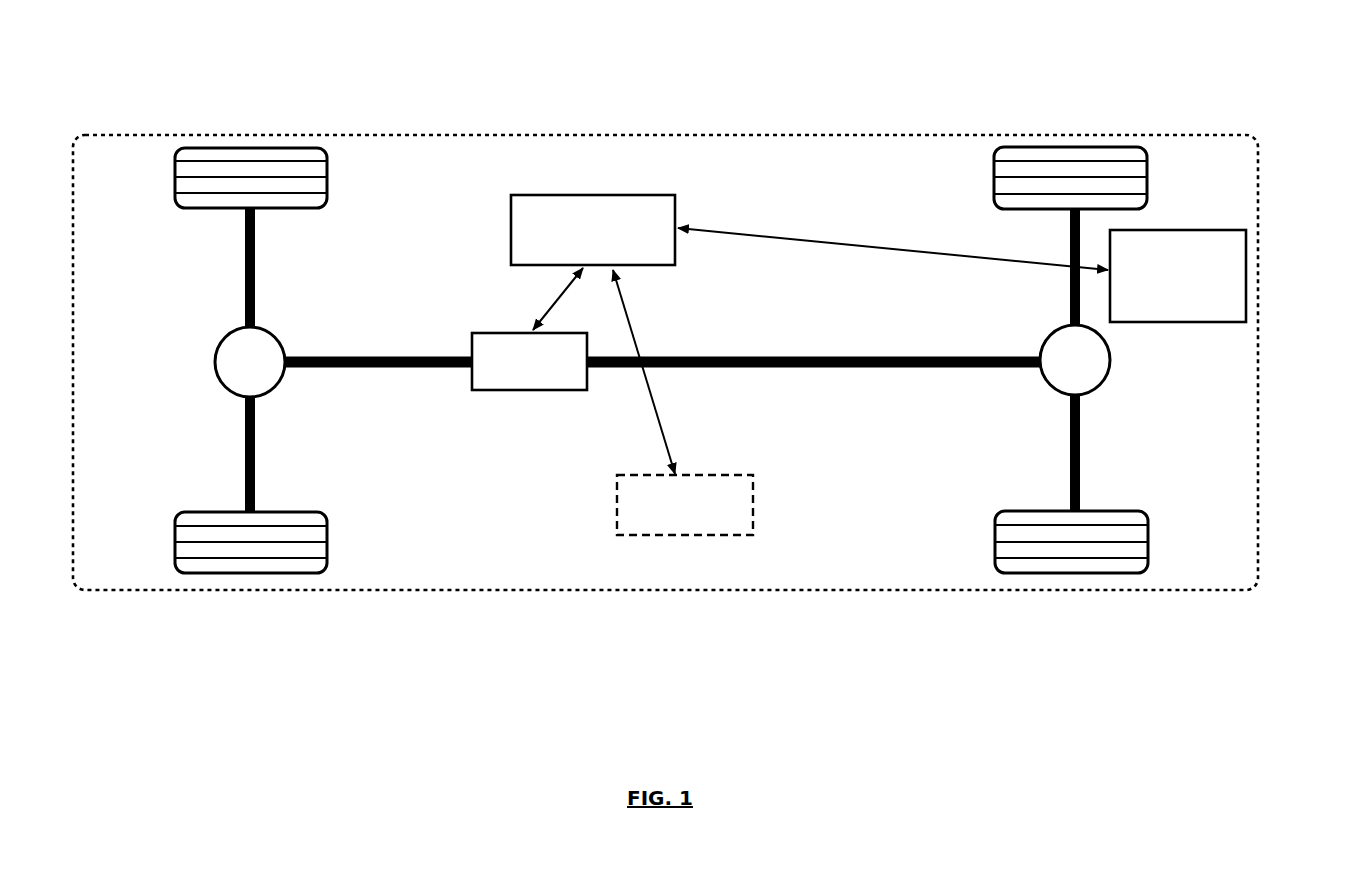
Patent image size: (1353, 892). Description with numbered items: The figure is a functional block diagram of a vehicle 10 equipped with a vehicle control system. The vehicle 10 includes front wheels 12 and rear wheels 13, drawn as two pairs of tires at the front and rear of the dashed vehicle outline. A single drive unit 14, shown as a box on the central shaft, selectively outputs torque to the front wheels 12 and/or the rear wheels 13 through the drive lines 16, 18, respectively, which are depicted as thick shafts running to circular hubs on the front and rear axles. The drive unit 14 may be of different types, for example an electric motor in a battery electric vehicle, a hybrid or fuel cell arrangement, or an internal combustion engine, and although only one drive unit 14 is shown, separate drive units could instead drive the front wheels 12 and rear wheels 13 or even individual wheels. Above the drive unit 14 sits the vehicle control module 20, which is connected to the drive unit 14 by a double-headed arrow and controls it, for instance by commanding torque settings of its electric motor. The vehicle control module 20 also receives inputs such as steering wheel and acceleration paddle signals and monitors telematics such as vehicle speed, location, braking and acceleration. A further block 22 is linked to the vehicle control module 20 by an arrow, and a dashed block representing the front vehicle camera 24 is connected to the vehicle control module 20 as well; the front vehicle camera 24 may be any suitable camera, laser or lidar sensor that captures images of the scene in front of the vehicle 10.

The vehicle 10 is at (1282, 88).
The front wheels 12 is at (1049, 147).
The rear wheels 13 is at (222, 148).
The drive unit 14 is at (484, 390).
The drive line 16 is at (1110, 358).
The drive line 18 is at (216, 373).
The vehicle control module 20 is at (592, 195).
The battery / power source 22 is at (1246, 272).
The front vehicle camera 24 is at (753, 500).